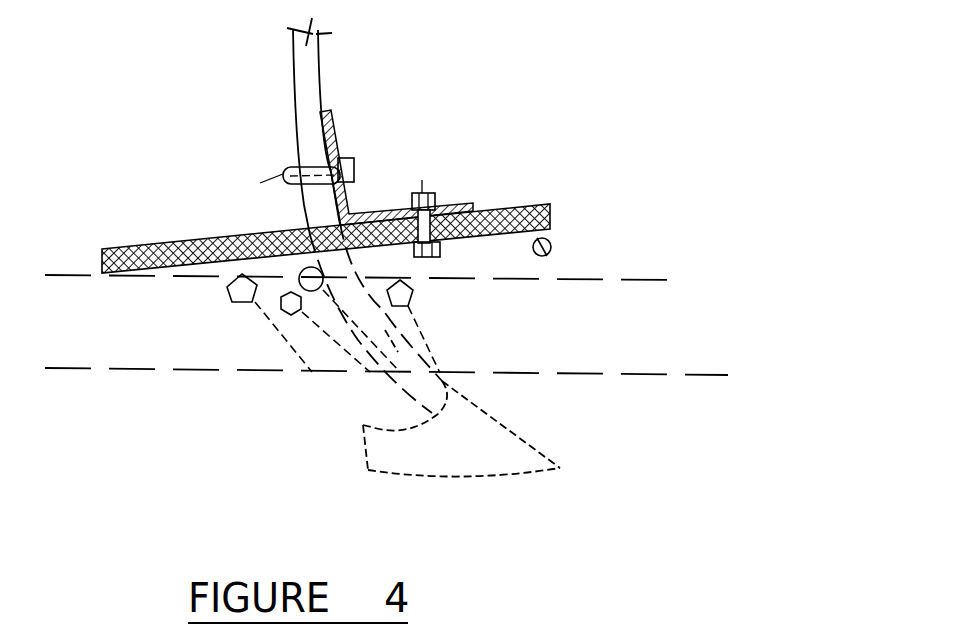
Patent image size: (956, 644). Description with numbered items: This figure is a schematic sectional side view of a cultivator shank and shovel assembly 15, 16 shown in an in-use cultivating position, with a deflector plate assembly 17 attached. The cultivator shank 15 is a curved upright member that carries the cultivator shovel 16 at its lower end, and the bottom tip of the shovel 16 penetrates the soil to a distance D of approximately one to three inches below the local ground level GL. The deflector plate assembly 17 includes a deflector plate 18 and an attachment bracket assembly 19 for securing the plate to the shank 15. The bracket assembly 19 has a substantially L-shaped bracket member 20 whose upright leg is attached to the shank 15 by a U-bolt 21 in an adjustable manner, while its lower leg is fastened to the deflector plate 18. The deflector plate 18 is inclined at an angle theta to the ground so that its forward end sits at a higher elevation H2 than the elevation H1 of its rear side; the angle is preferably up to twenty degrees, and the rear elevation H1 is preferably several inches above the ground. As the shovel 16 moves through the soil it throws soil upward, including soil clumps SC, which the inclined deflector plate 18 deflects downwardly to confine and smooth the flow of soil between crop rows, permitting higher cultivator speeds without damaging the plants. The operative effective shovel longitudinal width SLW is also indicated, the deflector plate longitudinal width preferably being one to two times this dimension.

The cultivator shank 15 is at (327, 50).
The cultivator shovel 16 is at (503, 403).
The deflector plate assembly 17 is at (167, 131).
The deflector plate 18 is at (370, 227).
The attachment bracket assembly 19 is at (421, 167).
The L-shaped bracket member 20 is at (525, 199).
The U-bolt 21 is at (391, 130).
The soil clumps SC is at (387, 305).
The local ground level GL is at (654, 332).
The rear elevation of deflector plate H1 is at (118, 277).
The forward elevation of deflector plate H2 is at (584, 230).
The penetration depth D is at (585, 477).
The shovel longitudinal width SLW is at (560, 493).